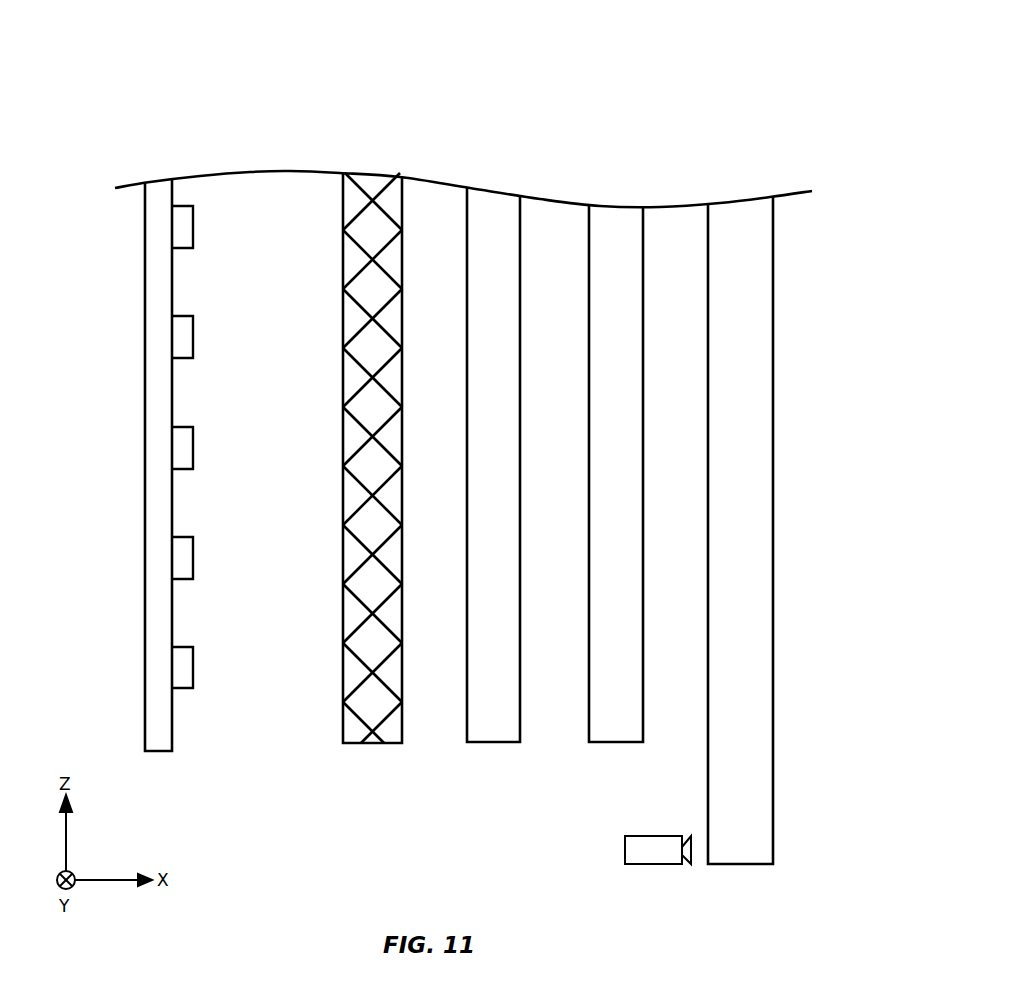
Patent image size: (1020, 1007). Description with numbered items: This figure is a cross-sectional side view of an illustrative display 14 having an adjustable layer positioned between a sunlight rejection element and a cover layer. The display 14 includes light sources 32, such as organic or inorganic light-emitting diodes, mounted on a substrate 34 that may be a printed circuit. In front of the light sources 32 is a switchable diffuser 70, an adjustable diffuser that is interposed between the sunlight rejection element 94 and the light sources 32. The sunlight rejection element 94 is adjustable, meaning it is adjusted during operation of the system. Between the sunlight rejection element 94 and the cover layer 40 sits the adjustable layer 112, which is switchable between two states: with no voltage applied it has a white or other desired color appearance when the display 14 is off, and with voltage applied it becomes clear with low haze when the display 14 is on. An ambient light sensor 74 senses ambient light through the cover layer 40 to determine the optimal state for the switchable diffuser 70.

The display 14 is at (586, 68).
The substrate 34 is at (161, 190).
The light sources 32 is at (184, 225).
The switchable diffuser 70 is at (374, 186).
The sunlight rejection element 94 is at (497, 200).
The adjustable layer 112 is at (616, 212).
The cover layer 40 is at (744, 210).
The ambient light sensor 74 is at (625, 851).